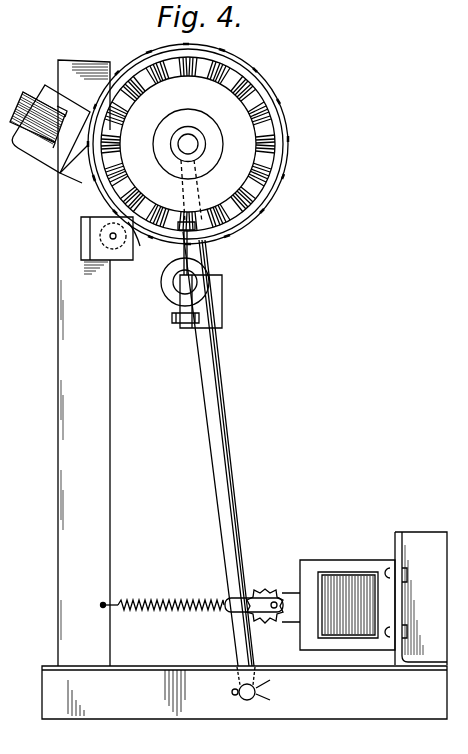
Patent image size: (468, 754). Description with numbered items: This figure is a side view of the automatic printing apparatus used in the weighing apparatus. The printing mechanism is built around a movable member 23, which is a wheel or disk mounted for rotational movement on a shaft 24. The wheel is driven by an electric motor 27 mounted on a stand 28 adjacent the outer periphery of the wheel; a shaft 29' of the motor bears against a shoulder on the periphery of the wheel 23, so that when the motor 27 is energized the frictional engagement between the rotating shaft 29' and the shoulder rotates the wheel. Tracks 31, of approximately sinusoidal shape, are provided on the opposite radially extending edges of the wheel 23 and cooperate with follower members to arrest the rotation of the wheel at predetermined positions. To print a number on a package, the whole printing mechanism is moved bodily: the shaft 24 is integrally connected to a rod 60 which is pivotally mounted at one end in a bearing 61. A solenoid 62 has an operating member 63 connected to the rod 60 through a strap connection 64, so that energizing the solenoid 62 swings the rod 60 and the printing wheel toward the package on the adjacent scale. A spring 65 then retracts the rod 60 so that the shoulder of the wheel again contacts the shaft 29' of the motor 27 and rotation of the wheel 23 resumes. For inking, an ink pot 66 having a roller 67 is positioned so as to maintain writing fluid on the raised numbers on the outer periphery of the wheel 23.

The movable member 23 is at (293, 187).
The shaft 24 is at (190, 148).
The electric motor 27 is at (47, 90).
The stand 28 is at (57, 305).
The shaft of the motor 29' is at (51, 141).
The tracks 31 is at (266, 132).
The rod 60 is at (228, 437).
The bearing 61 is at (252, 698).
The solenoid 62 is at (350, 560).
The operating member 63 is at (266, 592).
The strap connection 64 is at (232, 600).
The spring 65 is at (162, 598).
The ink pot 66 is at (121, 262).
The roller 67 is at (126, 236).